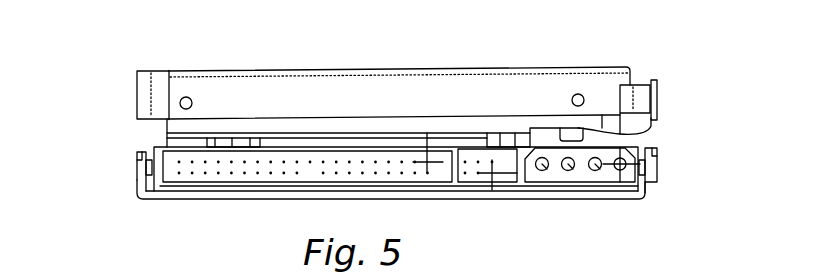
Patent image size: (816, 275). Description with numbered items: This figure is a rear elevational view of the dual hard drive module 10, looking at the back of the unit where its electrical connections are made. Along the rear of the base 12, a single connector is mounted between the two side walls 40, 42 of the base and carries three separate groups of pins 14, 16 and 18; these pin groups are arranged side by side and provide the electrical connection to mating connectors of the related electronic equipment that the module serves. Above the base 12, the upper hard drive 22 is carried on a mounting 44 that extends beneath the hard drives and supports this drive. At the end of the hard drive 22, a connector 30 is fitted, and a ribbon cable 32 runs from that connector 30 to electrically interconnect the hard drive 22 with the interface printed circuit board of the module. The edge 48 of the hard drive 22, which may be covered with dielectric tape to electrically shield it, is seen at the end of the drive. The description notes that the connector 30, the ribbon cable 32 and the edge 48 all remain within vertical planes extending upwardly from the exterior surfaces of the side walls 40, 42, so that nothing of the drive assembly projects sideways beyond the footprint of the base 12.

The dual hard drive module 10 is at (555, 260).
The base 12 is at (196, 200).
The group of pins 14 is at (264, 170).
The group of pins 16 is at (481, 180).
The group of pins 18 is at (607, 172).
The hard drive 22 is at (290, 70).
The connector 30 is at (657, 90).
The ribbon cable 32 is at (652, 128).
The side wall 40 is at (657, 190).
The side wall 42 is at (137, 165).
The mounting 44 is at (367, 125).
The edge 48 is at (137, 88).